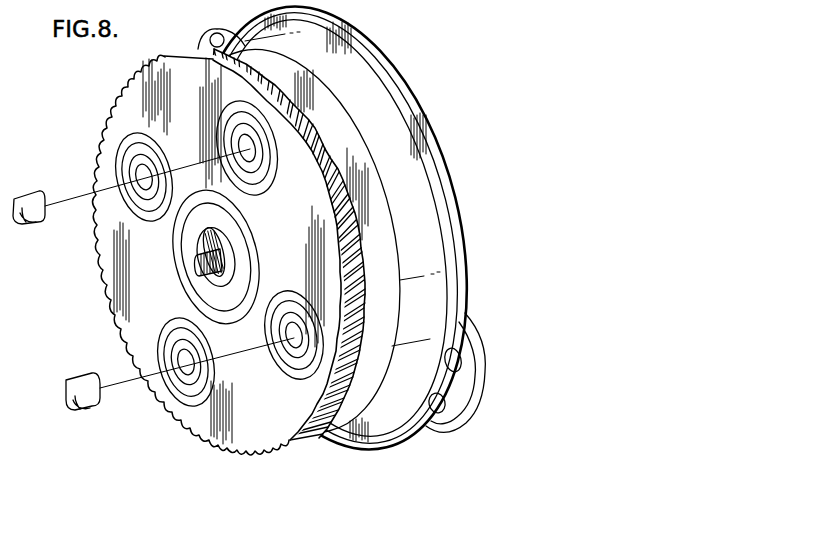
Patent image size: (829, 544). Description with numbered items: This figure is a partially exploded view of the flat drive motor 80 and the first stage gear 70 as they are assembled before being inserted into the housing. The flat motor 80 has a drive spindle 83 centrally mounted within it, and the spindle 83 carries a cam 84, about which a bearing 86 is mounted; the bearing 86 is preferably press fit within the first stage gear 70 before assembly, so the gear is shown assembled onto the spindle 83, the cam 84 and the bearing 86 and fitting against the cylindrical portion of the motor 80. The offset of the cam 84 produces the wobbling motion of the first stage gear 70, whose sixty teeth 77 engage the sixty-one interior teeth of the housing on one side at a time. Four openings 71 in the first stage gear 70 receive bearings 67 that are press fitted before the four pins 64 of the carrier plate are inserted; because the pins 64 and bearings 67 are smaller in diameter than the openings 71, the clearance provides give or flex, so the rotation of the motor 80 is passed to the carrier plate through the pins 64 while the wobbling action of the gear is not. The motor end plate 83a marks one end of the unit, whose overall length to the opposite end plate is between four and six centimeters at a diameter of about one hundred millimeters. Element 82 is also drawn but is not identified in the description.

The pins 64 is at (90, 408).
The bearings 67 is at (193, 392).
The first stage gear 70 is at (257, 434).
The openings 71 is at (303, 375).
The teeth 77 is at (303, 113).
The flat drive motor 80 is at (428, 202).
The mounting lug 82 is at (211, 44).
The drive spindle 83 is at (222, 263).
The motor end plate 83a is at (430, 120).
The cam 84 is at (202, 238).
The bearing 86 is at (198, 283).